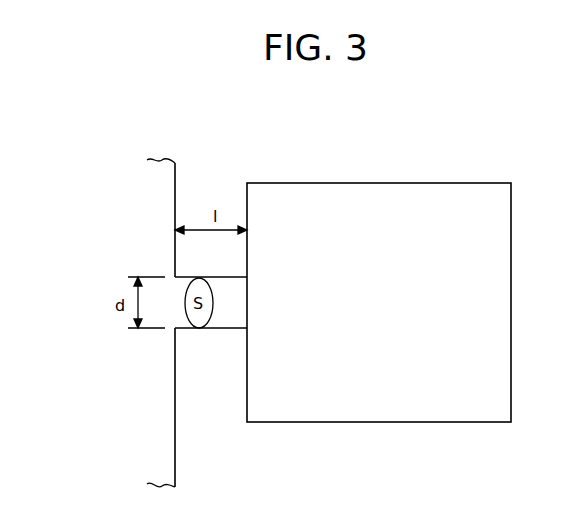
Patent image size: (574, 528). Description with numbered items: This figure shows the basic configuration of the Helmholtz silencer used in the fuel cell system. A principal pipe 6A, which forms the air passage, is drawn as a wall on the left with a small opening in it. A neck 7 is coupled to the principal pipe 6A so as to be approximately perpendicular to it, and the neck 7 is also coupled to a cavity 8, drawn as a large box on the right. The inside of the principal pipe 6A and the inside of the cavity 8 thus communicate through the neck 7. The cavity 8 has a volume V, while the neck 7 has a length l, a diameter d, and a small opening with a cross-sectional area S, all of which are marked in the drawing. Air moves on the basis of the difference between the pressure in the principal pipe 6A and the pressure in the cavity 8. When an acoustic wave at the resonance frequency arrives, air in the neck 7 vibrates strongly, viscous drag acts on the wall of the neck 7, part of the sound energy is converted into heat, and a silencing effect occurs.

The principal pipe 6A is at (175, 443).
The neck 7 is at (230, 328).
The cavity 8 is at (357, 183).